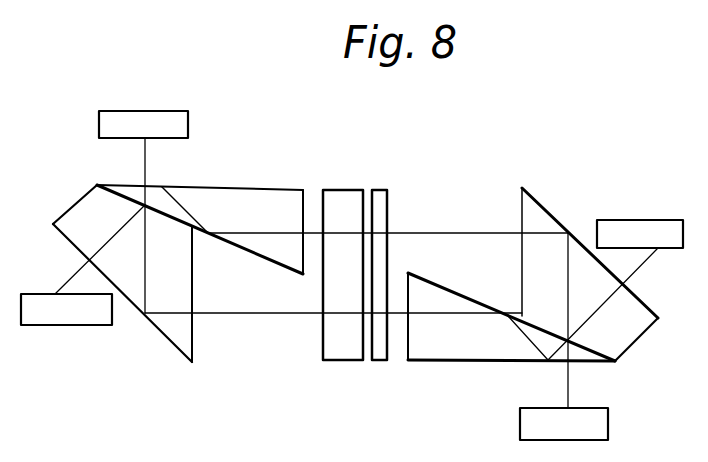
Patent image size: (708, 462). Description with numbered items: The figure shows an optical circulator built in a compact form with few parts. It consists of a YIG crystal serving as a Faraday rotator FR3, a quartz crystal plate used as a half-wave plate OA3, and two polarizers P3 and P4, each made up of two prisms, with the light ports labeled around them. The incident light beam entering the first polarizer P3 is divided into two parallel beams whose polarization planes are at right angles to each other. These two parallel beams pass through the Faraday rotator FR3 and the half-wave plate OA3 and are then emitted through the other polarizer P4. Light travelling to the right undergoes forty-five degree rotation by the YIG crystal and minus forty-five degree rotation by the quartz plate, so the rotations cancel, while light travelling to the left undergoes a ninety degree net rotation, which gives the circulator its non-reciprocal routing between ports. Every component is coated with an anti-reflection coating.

The polarizer P3 is at (159, 338).
The polarizer P4 is at (548, 207).
The Faraday rotator FR3 is at (351, 186).
The half-wave plate OA3 is at (378, 362).